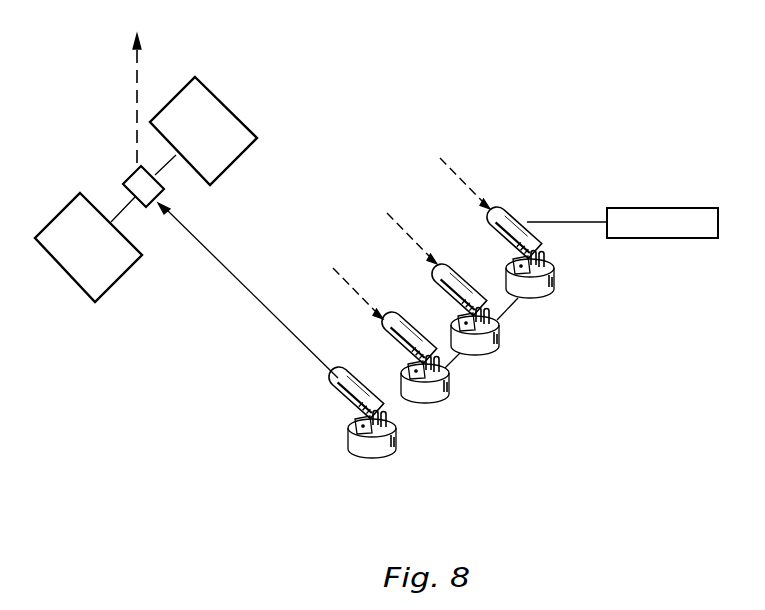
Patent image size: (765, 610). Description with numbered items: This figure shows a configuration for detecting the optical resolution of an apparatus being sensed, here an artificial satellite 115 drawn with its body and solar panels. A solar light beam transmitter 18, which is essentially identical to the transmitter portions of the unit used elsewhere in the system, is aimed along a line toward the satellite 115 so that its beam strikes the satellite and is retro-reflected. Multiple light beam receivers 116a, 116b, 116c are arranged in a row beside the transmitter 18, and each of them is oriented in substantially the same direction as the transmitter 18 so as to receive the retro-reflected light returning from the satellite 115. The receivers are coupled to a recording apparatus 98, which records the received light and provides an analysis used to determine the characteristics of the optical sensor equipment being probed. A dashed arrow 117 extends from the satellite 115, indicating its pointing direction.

The solar light beam transmitter 18 is at (350, 411).
The recording apparatus 98 is at (650, 208).
The artificial satellite 115 is at (163, 188).
The light beam receiver 116a is at (447, 397).
The light beam receiver 116b is at (500, 345).
The light beam receiver 116c is at (555, 285).
The spacecraft axis direction 117 is at (138, 82).